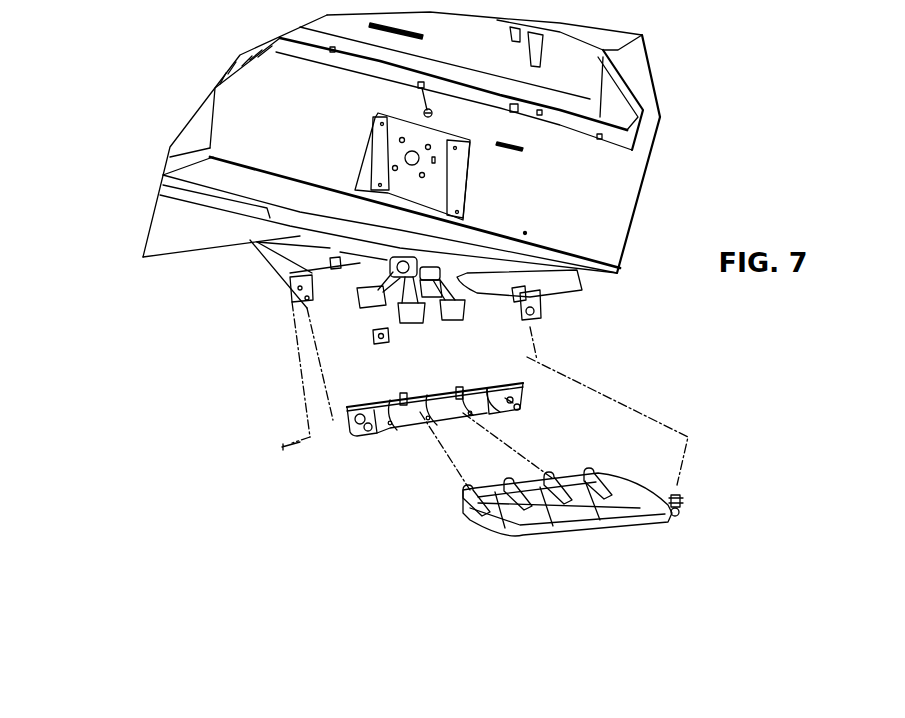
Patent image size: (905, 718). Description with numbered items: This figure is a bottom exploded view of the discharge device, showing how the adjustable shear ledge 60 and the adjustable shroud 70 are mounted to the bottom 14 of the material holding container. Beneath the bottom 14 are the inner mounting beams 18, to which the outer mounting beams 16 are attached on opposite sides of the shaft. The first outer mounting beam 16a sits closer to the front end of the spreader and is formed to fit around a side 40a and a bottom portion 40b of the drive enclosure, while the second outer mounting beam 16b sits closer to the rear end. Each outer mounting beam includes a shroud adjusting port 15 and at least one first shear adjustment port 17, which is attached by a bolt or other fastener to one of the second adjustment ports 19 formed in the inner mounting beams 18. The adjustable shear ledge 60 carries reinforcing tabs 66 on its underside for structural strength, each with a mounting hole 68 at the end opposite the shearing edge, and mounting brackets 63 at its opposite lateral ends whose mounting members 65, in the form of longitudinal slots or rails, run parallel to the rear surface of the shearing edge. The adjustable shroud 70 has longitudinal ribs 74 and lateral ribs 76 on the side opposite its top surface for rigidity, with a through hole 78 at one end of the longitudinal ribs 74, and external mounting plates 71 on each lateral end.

The bottom 14 is at (317, 247).
The shroud adjusting port 15 is at (383, 342).
The outer mounting beams 16 is at (423, 321).
The first outer mounting beam 16a is at (503, 293).
The second outer mounting beam 16b is at (343, 317).
The first shear adjustment port 17 is at (460, 276).
The inner mounting beams 18 is at (293, 243).
The second adjustment ports 19 is at (307, 298).
The side 40a is at (622, 252).
The bottom portion 40b is at (605, 275).
The adjustable shear ledge 60 is at (510, 450).
The mounting brackets 63 is at (348, 412).
The mounting members 65 is at (540, 402).
The reinforcing tabs 66 is at (422, 408).
The mounting hole 68 is at (428, 421).
The adjustable shroud 70 is at (558, 546).
The external mounting plates 71 is at (658, 510).
The longitudinal ribs 74 is at (573, 507).
The lateral ribs 76 is at (602, 512).
The through hole 78 is at (555, 480).